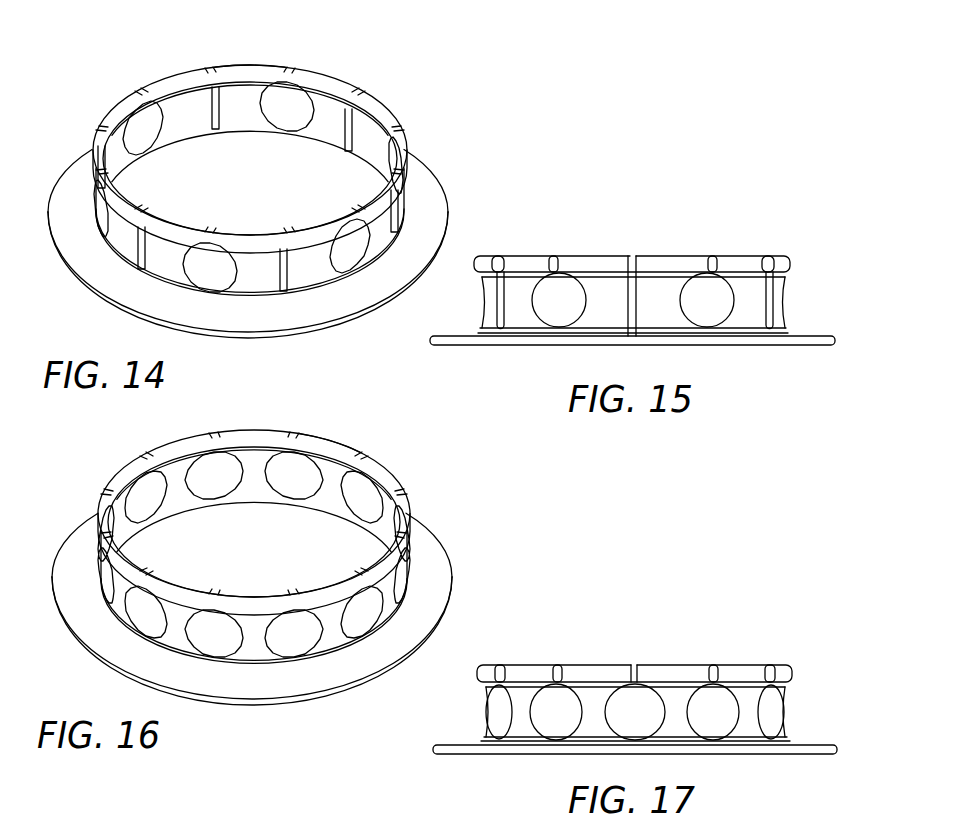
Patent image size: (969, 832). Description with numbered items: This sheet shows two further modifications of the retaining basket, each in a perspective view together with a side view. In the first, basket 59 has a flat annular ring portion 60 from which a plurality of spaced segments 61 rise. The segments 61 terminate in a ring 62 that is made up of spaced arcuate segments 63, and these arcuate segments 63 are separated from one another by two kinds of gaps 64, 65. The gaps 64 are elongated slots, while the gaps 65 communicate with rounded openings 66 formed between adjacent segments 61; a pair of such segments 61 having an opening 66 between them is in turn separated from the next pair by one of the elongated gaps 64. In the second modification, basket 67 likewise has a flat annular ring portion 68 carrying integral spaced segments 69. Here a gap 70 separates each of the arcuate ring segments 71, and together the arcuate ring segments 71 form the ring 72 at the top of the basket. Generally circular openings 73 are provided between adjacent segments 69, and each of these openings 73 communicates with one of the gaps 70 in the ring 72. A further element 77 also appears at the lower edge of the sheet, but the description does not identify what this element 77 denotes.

In FIG. 14, the bearing cage assembly 59 is at (452, 135).
In FIG. 15, the bearing cage assembly 59 is at (677, 205).
In FIG. 14, the flange 60 is at (312, 307).
In FIG. 15, the flange 60 is at (470, 336).
In FIG. 14, the cylindrical wall 61 is at (260, 282).
In FIG. 15, the cylindrical wall 61 is at (603, 297).
In FIG. 14, the top ring 62 is at (320, 73).
In FIG. 15, the top ring 62 is at (528, 248).
In FIG. 14, the ring segment 63 is at (252, 72).
In FIG. 14, the post 64 is at (212, 72).
In FIG. 14, the tab 65 is at (208, 240).
In FIG. 15, the tab 65 is at (712, 267).
In FIG. 15, the aperture 66 is at (707, 307).
In FIG. 16, the bearing cage assembly 67 is at (423, 475).
In FIG. 17, the bearing cage assembly 67 is at (575, 620).
In FIG. 16, the flange 68 is at (437, 587).
In FIG. 17, the flange 68 is at (465, 745).
In FIG. 16, the aperture 69 is at (328, 637).
In FIG. 17, the aperture 69 is at (530, 713).
In FIG. 16, the gap 70 is at (292, 435).
In FIG. 17, the gap 70 is at (635, 665).
In FIG. 16, the ring segment 71 is at (323, 447).
In FIG. 16, the top ring 72 is at (254, 496).
In FIG. 17, the top ring 72 is at (752, 653).
In FIG. 17, the aperture 73 is at (647, 712).
In FIG. 16, the cage 77 is at (250, 831).